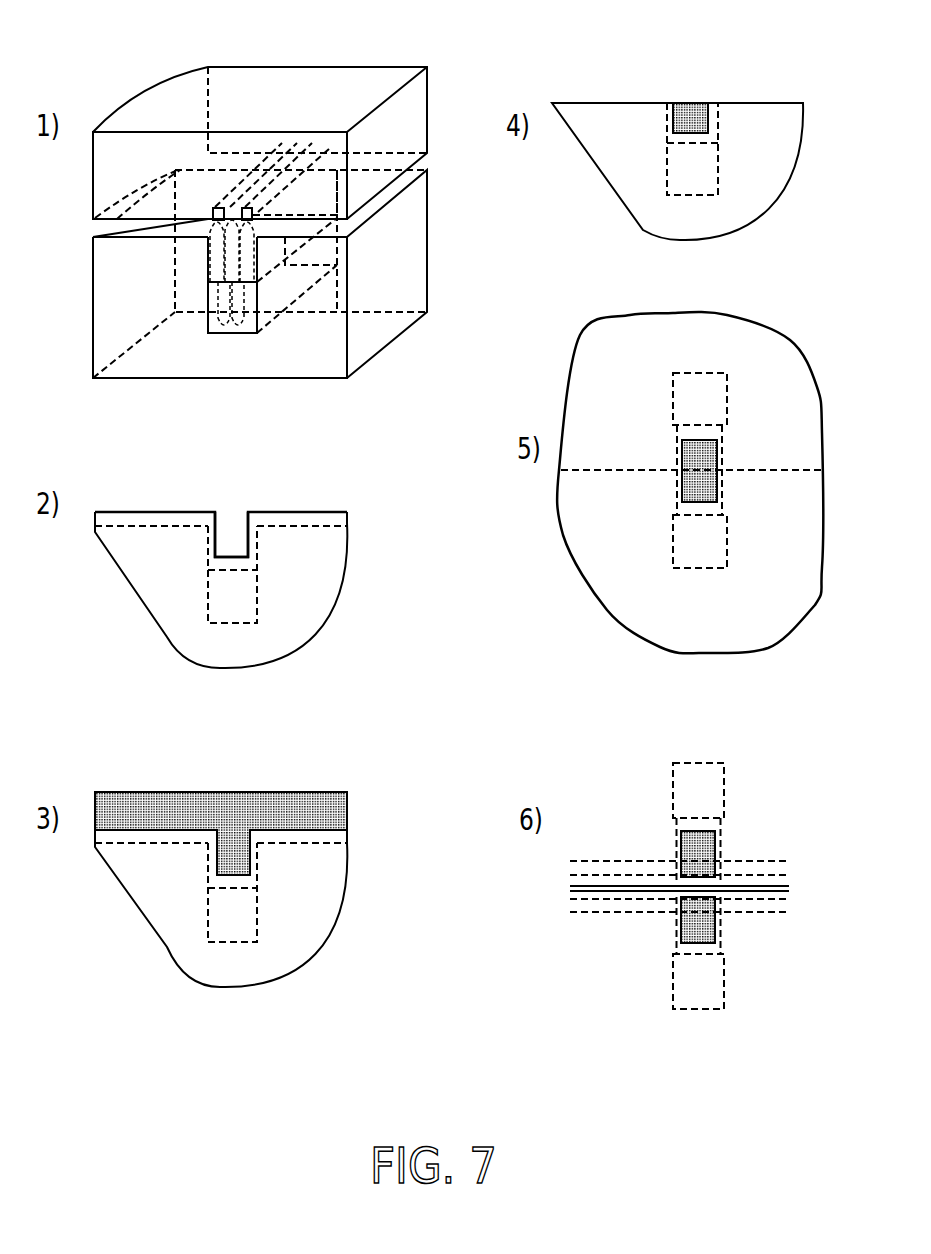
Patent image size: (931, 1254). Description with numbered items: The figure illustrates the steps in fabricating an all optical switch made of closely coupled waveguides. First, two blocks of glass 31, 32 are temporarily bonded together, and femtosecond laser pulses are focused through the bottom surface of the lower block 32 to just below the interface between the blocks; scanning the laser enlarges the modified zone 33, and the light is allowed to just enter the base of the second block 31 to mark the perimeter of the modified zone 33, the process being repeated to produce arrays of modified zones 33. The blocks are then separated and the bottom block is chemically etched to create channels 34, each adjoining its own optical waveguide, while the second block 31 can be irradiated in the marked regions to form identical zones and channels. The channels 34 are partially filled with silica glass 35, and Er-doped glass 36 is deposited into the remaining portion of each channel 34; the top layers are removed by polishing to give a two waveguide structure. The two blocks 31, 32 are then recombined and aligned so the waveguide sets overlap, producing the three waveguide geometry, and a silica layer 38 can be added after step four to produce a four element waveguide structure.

The block of glass 31 is at (415, 97).
The lower block 32 is at (403, 275).
The modified zone 33 is at (220, 283).
The channel 34 is at (257, 550).
The silica glass 35 is at (250, 511).
The Er-doped glass 36 is at (232, 838).
The silica layer 38 is at (765, 882).